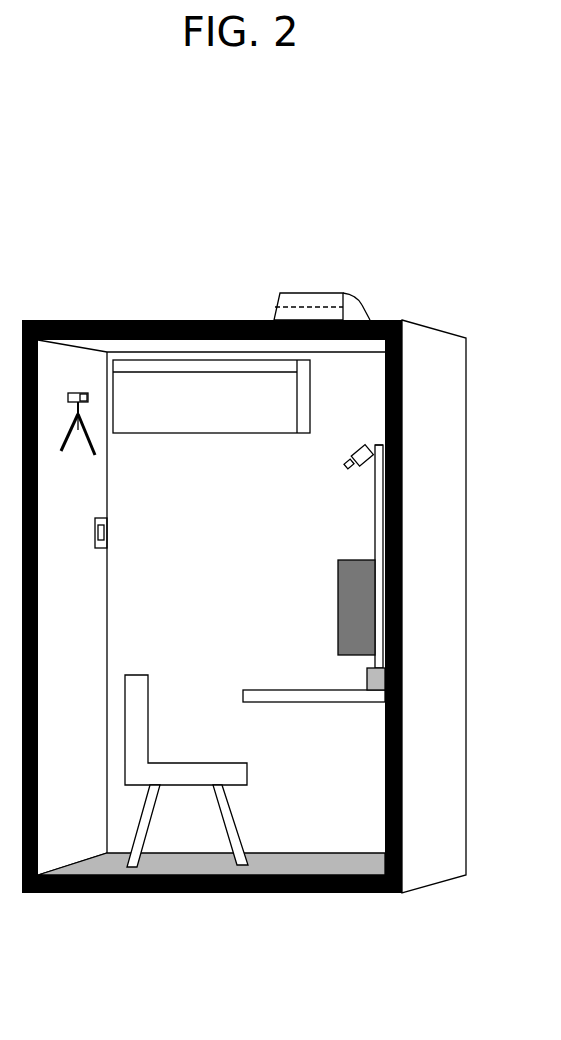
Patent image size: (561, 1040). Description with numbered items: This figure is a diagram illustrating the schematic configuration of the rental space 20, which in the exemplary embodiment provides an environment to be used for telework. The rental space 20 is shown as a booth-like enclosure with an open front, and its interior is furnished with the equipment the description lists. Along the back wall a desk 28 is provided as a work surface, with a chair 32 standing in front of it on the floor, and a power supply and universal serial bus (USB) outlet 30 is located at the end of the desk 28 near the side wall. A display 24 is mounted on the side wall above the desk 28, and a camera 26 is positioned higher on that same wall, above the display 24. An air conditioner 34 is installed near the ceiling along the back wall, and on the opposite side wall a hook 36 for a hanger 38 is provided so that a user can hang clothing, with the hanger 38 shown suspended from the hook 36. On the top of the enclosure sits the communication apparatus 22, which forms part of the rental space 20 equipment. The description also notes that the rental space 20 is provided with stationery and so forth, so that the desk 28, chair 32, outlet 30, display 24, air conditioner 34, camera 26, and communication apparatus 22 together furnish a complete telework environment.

The rental space 20 is at (403, 208).
The communication apparatus 22 is at (308, 300).
The display 24 is at (338, 602).
The camera 26 is at (350, 463).
The desk 28 is at (297, 690).
The power supply and universal serial bus (USB) outlet 30 is at (370, 703).
The chair 32 is at (137, 675).
The air conditioner 34 is at (268, 434).
The hook 36 is at (89, 396).
The hanger 38 is at (95, 444).